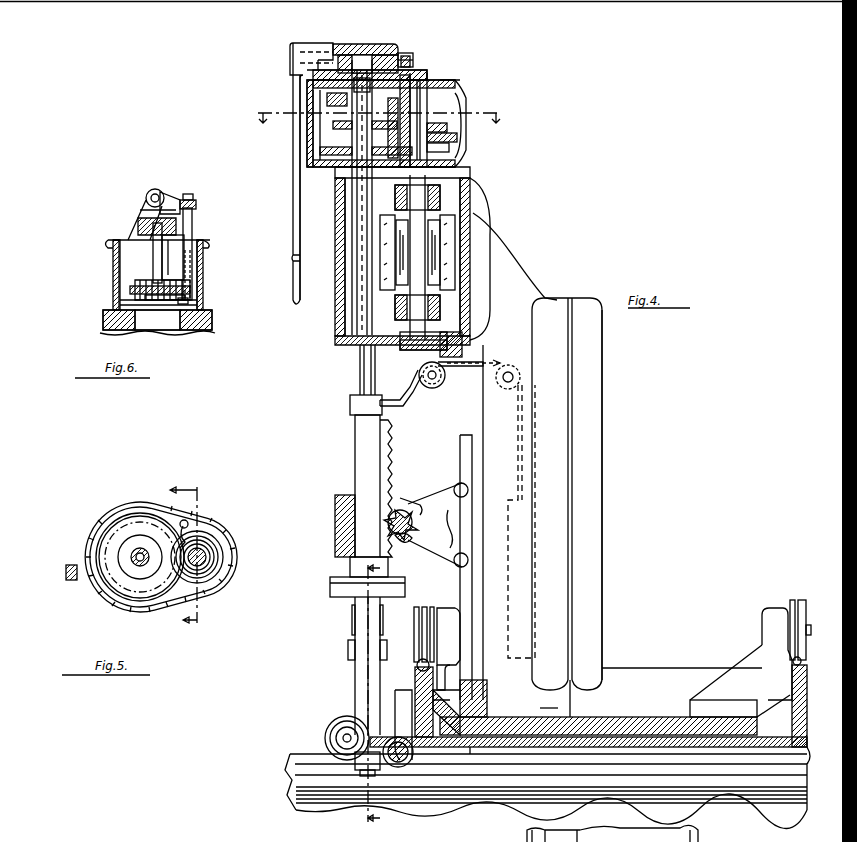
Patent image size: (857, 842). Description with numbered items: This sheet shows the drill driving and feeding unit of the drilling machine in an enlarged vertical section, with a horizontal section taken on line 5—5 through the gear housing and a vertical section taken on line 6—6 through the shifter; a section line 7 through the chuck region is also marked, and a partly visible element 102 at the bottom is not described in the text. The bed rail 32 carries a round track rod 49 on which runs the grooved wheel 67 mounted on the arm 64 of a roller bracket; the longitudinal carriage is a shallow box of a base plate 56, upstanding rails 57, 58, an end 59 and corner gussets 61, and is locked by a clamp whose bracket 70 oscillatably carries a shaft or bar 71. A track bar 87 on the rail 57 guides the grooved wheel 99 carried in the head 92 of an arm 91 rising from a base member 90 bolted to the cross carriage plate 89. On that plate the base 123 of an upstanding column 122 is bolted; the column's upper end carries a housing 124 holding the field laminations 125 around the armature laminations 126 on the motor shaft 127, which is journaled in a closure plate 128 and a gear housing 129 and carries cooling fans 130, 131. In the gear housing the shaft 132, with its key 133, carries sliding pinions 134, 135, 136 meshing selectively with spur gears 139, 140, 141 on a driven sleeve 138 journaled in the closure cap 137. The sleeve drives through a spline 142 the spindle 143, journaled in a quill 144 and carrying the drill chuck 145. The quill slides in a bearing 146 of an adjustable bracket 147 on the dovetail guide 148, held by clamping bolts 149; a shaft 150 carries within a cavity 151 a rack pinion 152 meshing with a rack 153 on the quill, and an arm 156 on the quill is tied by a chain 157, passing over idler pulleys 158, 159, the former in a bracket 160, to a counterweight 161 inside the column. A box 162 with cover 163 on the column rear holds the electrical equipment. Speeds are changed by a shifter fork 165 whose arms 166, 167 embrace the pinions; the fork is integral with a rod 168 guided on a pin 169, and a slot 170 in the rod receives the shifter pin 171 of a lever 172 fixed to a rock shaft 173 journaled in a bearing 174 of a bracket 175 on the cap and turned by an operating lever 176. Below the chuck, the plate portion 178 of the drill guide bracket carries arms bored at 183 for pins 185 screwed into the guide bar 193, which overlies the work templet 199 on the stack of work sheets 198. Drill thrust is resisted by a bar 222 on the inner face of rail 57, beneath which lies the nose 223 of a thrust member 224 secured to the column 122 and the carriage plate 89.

In FIG. 4, the section line 5— 5 is at (379, 111).
In FIG. 5, the section line 6— 6 is at (190, 557).
In FIG. 4, the section line 7— 7 is at (375, 696).
In FIG. 4, the longitudinal rail or side member 32 is at (300, 778).
In FIG. 4, the track rod 49 is at (292, 754).
In FIG. 4, the base plate 56 is at (650, 748).
In FIG. 4, the upstanding side or rail 57 is at (450, 747).
In FIG. 4, the upstanding side or rail 58 is at (803, 780).
In FIG. 4, the end 59 is at (662, 670).
In FIG. 4, the gusset or corner brace 61 is at (470, 755).
In FIG. 4, the bracket arm 64 is at (342, 718).
In FIG. 4, the grooved wheel 67 is at (328, 728).
In FIG. 4, the bracket 70 is at (400, 766).
In FIG. 4, the shaft or bar 71 is at (410, 766).
In FIG. 4, the track bar or rod 87 is at (417, 667).
In FIG. 4, the cross carriage plate 89 is at (625, 720).
In FIG. 4, the base member 90 is at (695, 700).
In FIG. 4, the arm 91 is at (745, 665).
In FIG. 4, the head 92 is at (448, 608).
In FIG. 4, the grooved wheel or roller 99 is at (430, 595).
In FIG. 4, the frame 102 is at (612, 833).
In FIG. 4, the upstanding column 122 is at (483, 408).
In FIG. 4, the base 123 is at (558, 708).
In FIG. 4, the housing 124 is at (470, 228).
In FIG. 6, the housing 124 is at (108, 322).
In FIG. 4, the motor field laminations 125 is at (455, 250).
In FIG. 4, the armature laminations 126 is at (440, 262).
In FIG. 4, the motor shaft 127 is at (420, 278).
In FIG. 4, the closure plate 128 is at (400, 340).
In FIG. 4, the gear case or housing 129 is at (462, 116).
In FIG. 6, the gear case or housing 129 is at (113, 290).
In FIG. 5, the gear case or housing 129 is at (110, 604).
In FIG. 4, the fan 130 is at (440, 200).
In FIG. 4, the fan 131 is at (450, 300).
In FIG. 4, the shaft 132 is at (465, 122).
In FIG. 6, the shaft 132 is at (153, 262).
In FIG. 5, the shaft 132 is at (206, 560).
In FIG. 4, the key 133 is at (425, 95).
In FIG. 4, the pinion 134 is at (452, 133).
In FIG. 6, the pinion 134 is at (190, 282).
In FIG. 5, the pinion 134 is at (210, 566).
In FIG. 4, the pinion 135 is at (458, 140).
In FIG. 6, the pinion 135 is at (192, 292).
In FIG. 5, the pinion 135 is at (210, 580).
In FIG. 4, the pinion 136 is at (450, 148).
In FIG. 6, the pinion 136 is at (120, 304).
In FIG. 4, the closure cap 137 is at (452, 92).
In FIG. 6, the closure cap 137 is at (113, 242).
In FIG. 4, the driven sleeve 138 is at (350, 198).
In FIG. 5, the driven sleeve 138 is at (148, 565).
In FIG. 4, the spur gear 139 is at (332, 93).
In FIG. 4, the spur gear 140 is at (348, 122).
In FIG. 5, the spur gear 140 is at (122, 552).
In FIG. 4, the spur gear 141 is at (343, 148).
In FIG. 5, the spur gear 141 is at (108, 540).
In FIG. 4, the spline 142 is at (360, 352).
In FIG. 4, the spindle 143 is at (360, 373).
In FIG. 4, the quill 144 is at (355, 452).
In FIG. 4, the drill mounting chuck 145 is at (350, 562).
In FIG. 4, the bearing 146 is at (335, 528).
In FIG. 4, the adjustable bracket 147 is at (435, 487).
In FIG. 4, the dovetail guide 148 is at (465, 458).
In FIG. 4, the clamping bolts 149 is at (448, 540).
In FIG. 4, the shaft 150 is at (410, 512).
In FIG. 4, the cavity 151 is at (410, 540).
In FIG. 4, the rack pinion 152 is at (405, 508).
In FIG. 4, the rack 153 is at (412, 442).
In FIG. 4, the arm 156 is at (398, 402).
In FIG. 4, the chain or cable 157 is at (450, 365).
In FIG. 4, the idler pulley 158 is at (432, 388).
In FIG. 4, the idler pulley 159 is at (512, 375).
In FIG. 4, the bracket 160 is at (440, 340).
In FIG. 4, the counter weight 161 is at (535, 512).
In FIG. 4, the box 162 is at (568, 298).
In FIG. 4, the cover 163 is at (600, 376).
In FIG. 6, the shifter fork 165 is at (190, 272).
In FIG. 5, the shifter fork 165 is at (190, 525).
In FIG. 6, the fork arm 166 is at (170, 278).
In FIG. 5, the fork arm 166 is at (215, 548).
In FIG. 6, the fork arm 167 is at (157, 320).
In FIG. 6, the shifter rod 168 is at (192, 228).
In FIG. 6, the guide pin or bar 169 is at (190, 302).
In FIG. 5, the guide pin or bar 169 is at (190, 522).
In FIG. 6, the slot 170 is at (196, 207).
In FIG. 6, the shifter pin 171 is at (170, 198).
In FIG. 6, the lever 172 is at (160, 190).
In FIG. 4, the rock shaft 173 is at (362, 44).
In FIG. 6, the rock shaft 173 is at (148, 196).
In FIG. 4, the bearing 174 is at (403, 52).
In FIG. 4, the bracket 175 is at (338, 45).
In FIG. 6, the bracket 175 is at (140, 220).
In FIG. 4, the operating lever 176 is at (293, 77).
In FIG. 6, the operating lever 176 is at (140, 212).
In FIG. 5, the operating lever 176 is at (68, 580).
In FIG. 4, the plate portion 178 is at (335, 596).
In FIG. 4, the bore 183 is at (355, 645).
In FIG. 4, the pin 185 is at (350, 700).
In FIG. 4, the bar 193 is at (355, 770).
In FIG. 4, the stack of work sheets 198 is at (330, 812).
In FIG. 4, the work templet 199 is at (297, 796).
In FIG. 4, the bar 222 is at (415, 684).
In FIG. 4, the nose 223 is at (470, 688).
In FIG. 4, the thrust 224 is at (475, 700).